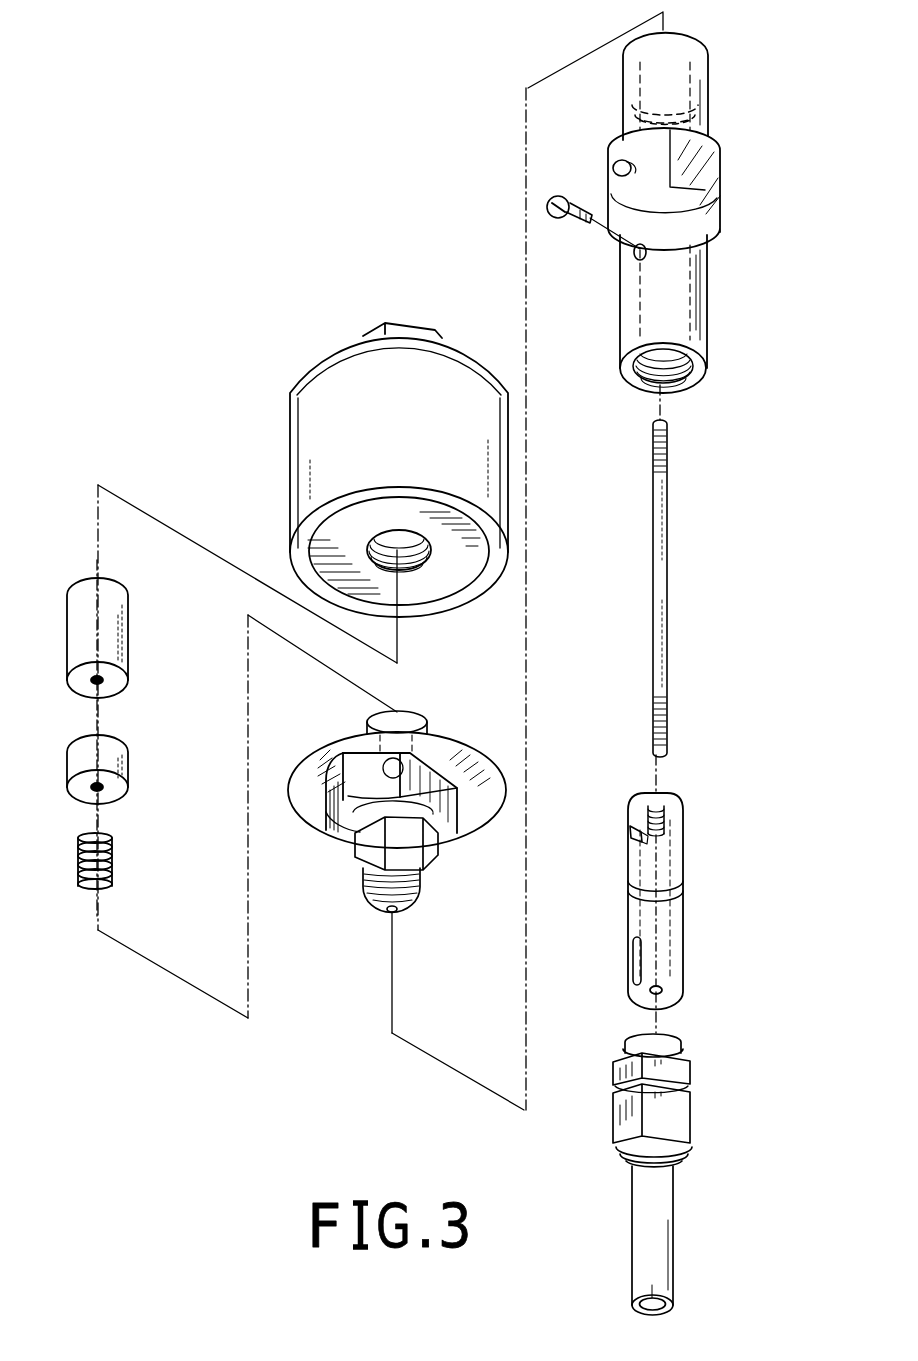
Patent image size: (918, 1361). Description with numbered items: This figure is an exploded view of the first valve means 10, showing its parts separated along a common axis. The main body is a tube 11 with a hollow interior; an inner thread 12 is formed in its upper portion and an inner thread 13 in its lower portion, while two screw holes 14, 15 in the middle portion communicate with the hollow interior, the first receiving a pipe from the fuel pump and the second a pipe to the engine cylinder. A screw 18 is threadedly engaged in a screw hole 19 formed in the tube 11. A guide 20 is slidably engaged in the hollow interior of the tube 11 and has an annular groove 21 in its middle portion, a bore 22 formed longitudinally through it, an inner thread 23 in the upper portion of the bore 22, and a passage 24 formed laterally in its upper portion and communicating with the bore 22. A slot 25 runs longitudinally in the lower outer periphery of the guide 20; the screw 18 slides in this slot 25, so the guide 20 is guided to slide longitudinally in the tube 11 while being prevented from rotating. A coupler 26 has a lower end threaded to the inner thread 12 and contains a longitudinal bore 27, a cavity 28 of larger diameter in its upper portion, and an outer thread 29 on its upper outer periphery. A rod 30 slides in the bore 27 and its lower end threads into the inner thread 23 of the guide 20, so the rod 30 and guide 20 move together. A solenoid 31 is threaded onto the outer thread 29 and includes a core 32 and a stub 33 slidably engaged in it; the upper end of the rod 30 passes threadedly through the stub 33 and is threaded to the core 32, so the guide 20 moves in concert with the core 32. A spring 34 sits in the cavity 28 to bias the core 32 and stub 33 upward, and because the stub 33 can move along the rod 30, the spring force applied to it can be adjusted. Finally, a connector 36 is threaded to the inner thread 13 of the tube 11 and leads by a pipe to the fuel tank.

The first valve means 10 is at (207, 408).
The tube 11 is at (708, 290).
The inner thread 12 is at (655, 85).
The inner thread 13 is at (650, 385).
The screw hole 14 is at (618, 166).
The screw hole 15 is at (704, 214).
The screw 18 is at (556, 219).
The screw hole 19 is at (634, 258).
The guide 20 is at (683, 878).
The annular groove 21 is at (683, 896).
The bore 22 is at (658, 868).
The inner thread 23 is at (668, 810).
The passage 24 is at (633, 832).
The slot 25 is at (630, 972).
The coupler 26 is at (345, 826).
The bore 27 is at (445, 850).
The cavity 28 is at (420, 714).
The outer thread 29 is at (400, 710).
The rod 30 is at (660, 507).
The solenoid 31 is at (302, 428).
The core 32 is at (118, 638).
The stub 33 is at (118, 766).
The spring 34 is at (112, 862).
The connector 36 is at (683, 1113).